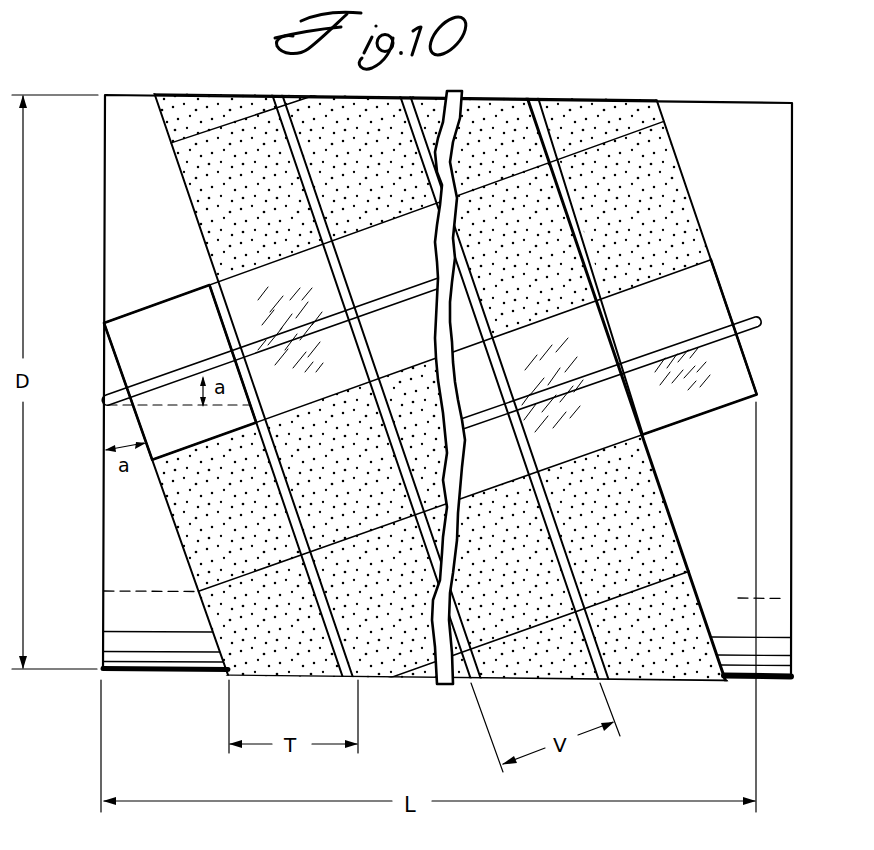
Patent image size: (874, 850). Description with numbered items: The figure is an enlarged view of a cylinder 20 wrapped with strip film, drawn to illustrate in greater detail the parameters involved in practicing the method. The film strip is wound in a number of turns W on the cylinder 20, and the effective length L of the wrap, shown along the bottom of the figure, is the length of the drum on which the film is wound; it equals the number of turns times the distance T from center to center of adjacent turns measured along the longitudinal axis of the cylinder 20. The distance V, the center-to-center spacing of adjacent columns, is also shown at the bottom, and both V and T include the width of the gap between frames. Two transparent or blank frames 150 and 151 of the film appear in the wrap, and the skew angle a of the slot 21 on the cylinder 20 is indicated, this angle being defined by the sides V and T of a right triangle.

The cylinder 20 is at (793, 122).
The slot 21 is at (405, 291).
The transparent or blank frame 150 is at (168, 299).
The transparent or blank frame 151 is at (257, 283).